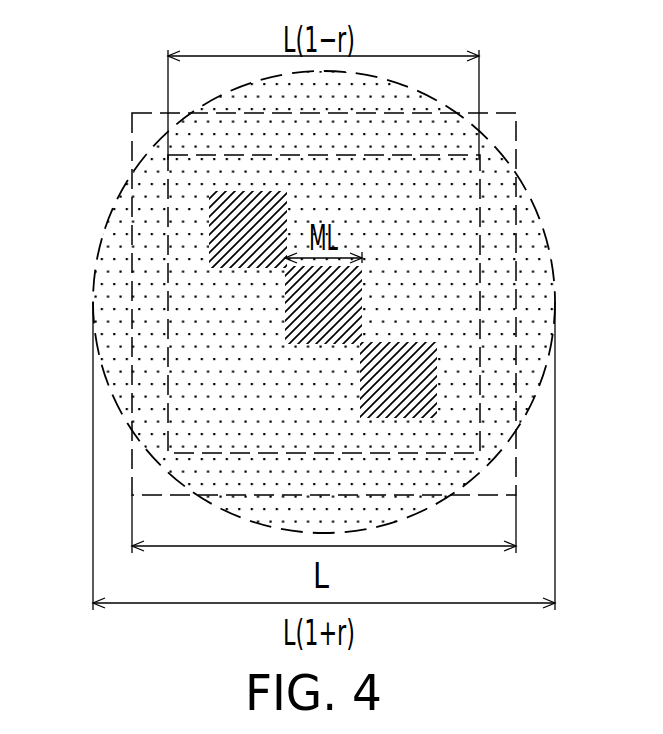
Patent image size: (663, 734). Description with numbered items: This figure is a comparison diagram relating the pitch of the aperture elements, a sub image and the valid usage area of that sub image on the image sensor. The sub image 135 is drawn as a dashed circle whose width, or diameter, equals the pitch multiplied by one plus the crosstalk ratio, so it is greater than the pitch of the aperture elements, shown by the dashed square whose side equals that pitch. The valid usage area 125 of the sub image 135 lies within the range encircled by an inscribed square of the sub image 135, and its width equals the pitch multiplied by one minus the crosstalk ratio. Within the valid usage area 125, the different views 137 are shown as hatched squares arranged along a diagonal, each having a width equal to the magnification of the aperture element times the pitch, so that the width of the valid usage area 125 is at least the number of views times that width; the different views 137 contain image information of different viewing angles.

The valid usage area 125 is at (481, 222).
The sub image 135 is at (113, 208).
The views 137 is at (345, 303).